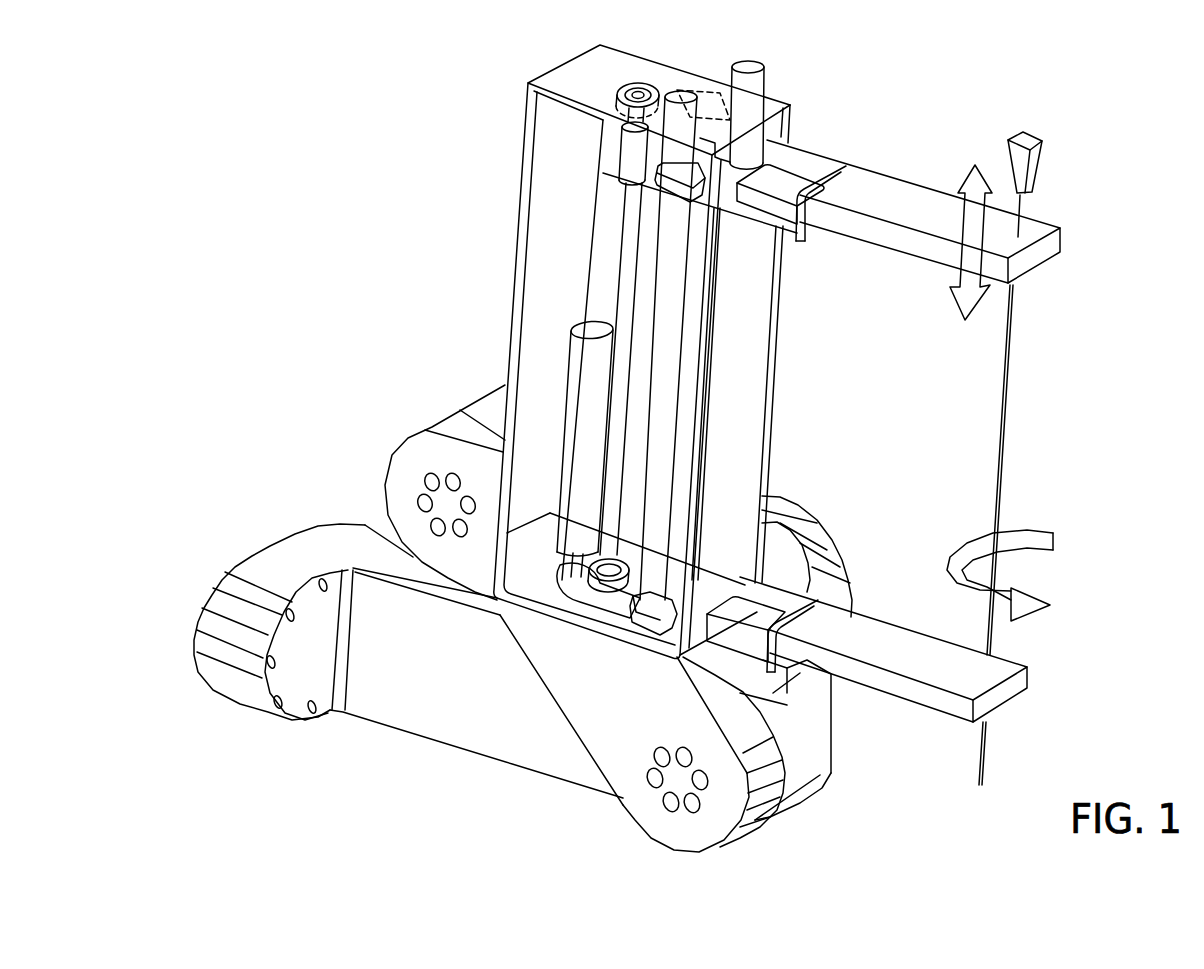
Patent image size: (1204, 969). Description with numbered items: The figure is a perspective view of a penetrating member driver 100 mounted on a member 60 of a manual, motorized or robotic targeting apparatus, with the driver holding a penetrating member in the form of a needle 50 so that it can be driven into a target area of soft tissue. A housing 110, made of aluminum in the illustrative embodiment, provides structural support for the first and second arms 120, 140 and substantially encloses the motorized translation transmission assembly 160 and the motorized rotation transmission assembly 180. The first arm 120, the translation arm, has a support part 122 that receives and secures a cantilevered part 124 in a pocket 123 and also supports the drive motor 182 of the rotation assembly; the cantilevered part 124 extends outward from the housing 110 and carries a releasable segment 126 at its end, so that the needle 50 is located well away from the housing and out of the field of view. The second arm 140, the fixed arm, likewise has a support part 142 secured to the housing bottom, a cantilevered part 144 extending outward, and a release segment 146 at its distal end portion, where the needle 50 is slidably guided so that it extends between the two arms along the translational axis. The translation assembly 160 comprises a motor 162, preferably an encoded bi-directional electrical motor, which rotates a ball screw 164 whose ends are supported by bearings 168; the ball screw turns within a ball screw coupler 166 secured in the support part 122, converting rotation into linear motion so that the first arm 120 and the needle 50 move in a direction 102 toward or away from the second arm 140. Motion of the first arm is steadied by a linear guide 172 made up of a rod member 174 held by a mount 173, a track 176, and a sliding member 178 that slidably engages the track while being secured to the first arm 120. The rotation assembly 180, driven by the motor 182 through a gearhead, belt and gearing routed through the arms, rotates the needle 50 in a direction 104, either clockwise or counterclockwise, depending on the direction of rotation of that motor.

The needle 50 is at (1010, 413).
The member of a targeting apparatus 60 is at (515, 773).
The penetrating member driver 100 is at (1062, 145).
The direction of translation 102 is at (960, 298).
The direction of rotation 104 is at (1053, 533).
The housing 110 is at (553, 130).
The first arm 120 is at (915, 195).
The support part 122 is at (799, 240).
The pocket 123 is at (845, 166).
The cantilevered part 124 is at (888, 197).
The releasable segment 126 is at (1040, 268).
The second arm 140 is at (878, 628).
The support part 142 is at (819, 598).
The cantilevered part 144 is at (893, 663).
The release segment 146 is at (1013, 690).
The motorized translation transmission assembly 160 is at (604, 428).
The motor 162 is at (577, 372).
The ball screw 164 is at (625, 242).
The ball screw coupler 166 is at (620, 153).
The bearings 168 is at (643, 83).
The linear guide 172 is at (697, 70).
The mount 173 is at (640, 627).
The rod member 174 is at (672, 358).
The track 176 is at (692, 412).
The sliding member 178 is at (693, 87).
The motorized rotation transmission assembly 180 is at (759, 108).
The motor 182 is at (753, 97).